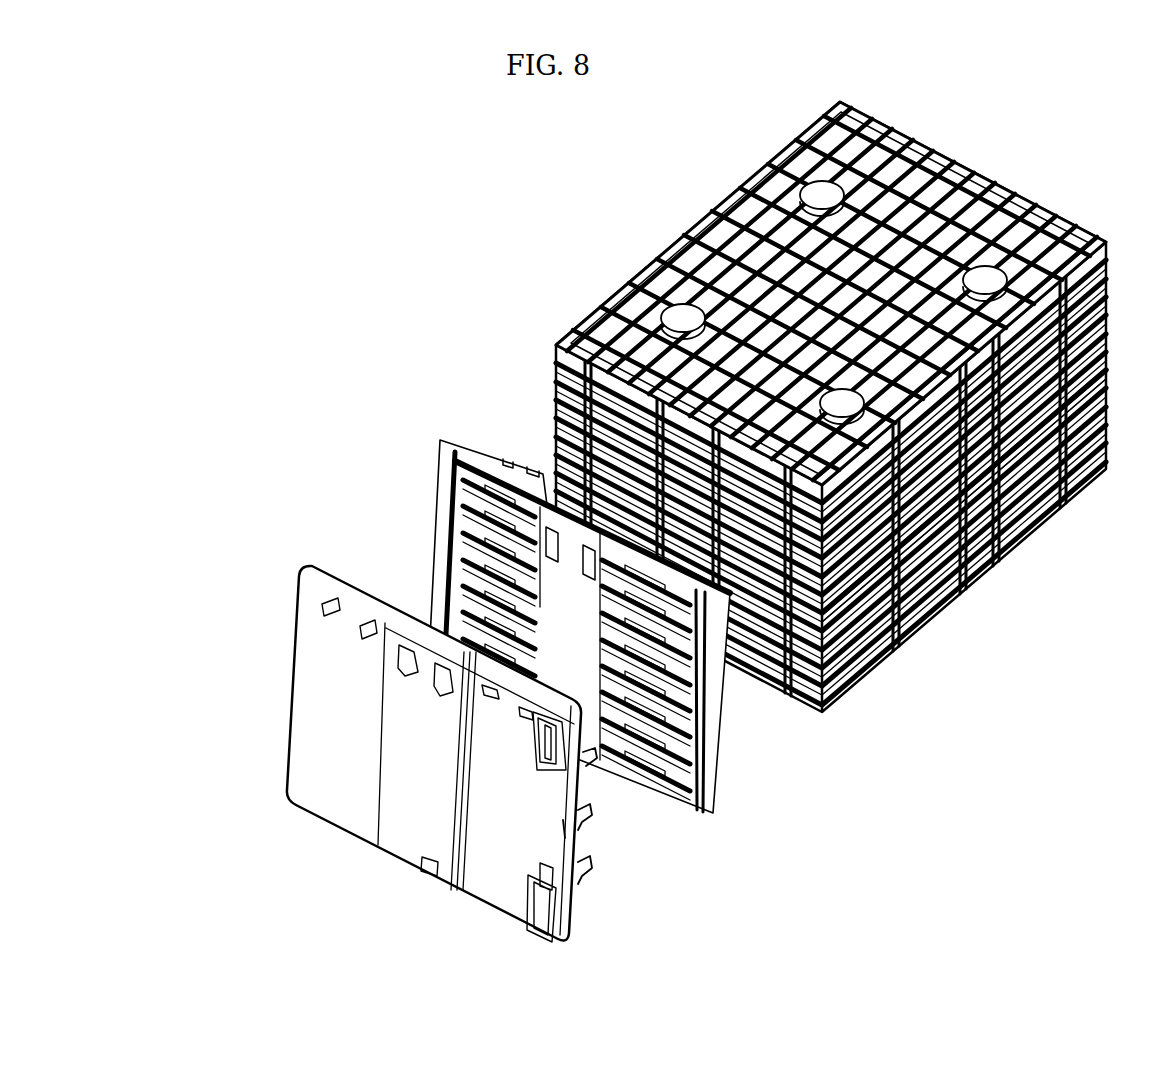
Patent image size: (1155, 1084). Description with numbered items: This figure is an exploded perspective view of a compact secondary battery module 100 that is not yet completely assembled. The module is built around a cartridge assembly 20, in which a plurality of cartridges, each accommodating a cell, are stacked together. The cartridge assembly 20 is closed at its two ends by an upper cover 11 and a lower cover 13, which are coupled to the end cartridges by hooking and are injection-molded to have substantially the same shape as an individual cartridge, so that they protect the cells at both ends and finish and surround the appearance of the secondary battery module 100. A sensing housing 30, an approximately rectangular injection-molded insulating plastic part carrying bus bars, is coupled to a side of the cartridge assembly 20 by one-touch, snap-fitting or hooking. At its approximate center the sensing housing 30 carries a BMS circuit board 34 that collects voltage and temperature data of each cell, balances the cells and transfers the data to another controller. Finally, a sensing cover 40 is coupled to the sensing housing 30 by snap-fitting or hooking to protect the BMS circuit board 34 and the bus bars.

The secondary battery module 100 is at (920, 800).
The upper cover 11 is at (916, 162).
The lower cover 13 is at (1017, 538).
The cartridge assembly 20 is at (972, 600).
The sensing housing 30 is at (727, 810).
The BMS circuit board 34 is at (564, 580).
The sensing cover 40 is at (278, 703).